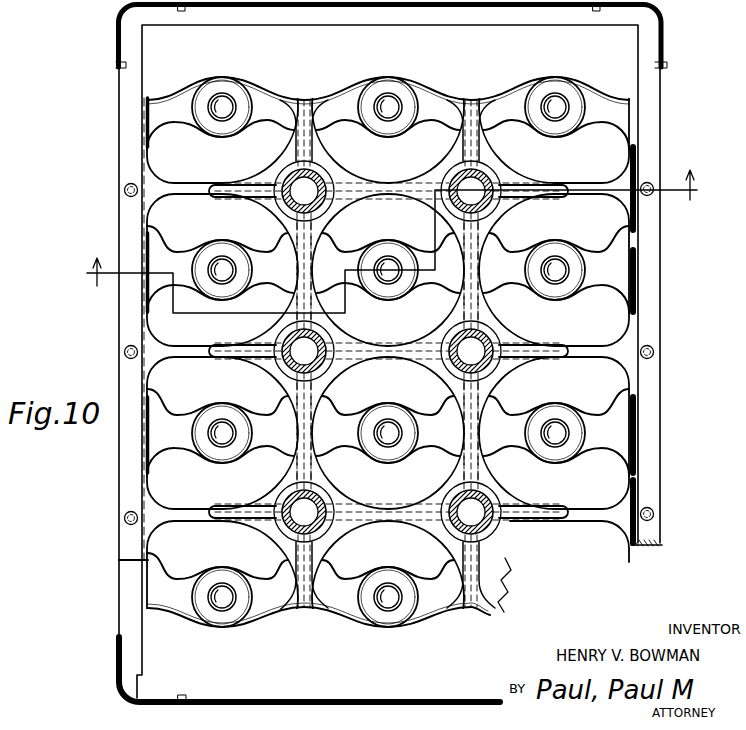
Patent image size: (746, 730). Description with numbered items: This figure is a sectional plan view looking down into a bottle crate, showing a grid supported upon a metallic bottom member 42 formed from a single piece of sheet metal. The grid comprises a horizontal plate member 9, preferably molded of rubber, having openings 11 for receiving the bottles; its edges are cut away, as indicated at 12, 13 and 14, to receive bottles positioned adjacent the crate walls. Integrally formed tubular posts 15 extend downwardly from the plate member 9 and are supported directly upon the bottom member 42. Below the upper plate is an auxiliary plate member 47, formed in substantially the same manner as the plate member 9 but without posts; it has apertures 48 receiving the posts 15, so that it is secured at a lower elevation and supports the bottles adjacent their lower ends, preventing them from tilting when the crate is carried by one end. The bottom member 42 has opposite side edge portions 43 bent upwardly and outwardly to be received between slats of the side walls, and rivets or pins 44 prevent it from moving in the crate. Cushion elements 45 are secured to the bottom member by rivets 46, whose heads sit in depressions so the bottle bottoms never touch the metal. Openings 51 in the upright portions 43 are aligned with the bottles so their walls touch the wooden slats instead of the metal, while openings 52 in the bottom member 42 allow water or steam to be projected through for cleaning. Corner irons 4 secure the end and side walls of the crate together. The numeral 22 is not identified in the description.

The corner iron 4 is at (117, 18).
The horizontal plate member 9 is at (389, 241).
The opening 11 is at (478, 270).
The cut-away portion 12 is at (440, 170).
The cut-away portion 13 is at (283, 172).
The cut-away portion 14 is at (292, 236).
The tubular post 15 is at (318, 182).
The saddle ridge 22 is at (412, 182).
The bottom member 42 is at (505, 98).
The side edge portion 43 is at (142, 328).
The rivet 44 is at (124, 190).
The cushion element 45 is at (236, 84).
The rivet 46 is at (217, 102).
The auxiliary plate member 47 is at (473, 100).
The aperture 48 is at (500, 184).
The opening 51 is at (152, 248).
The opening 52 is at (160, 136).